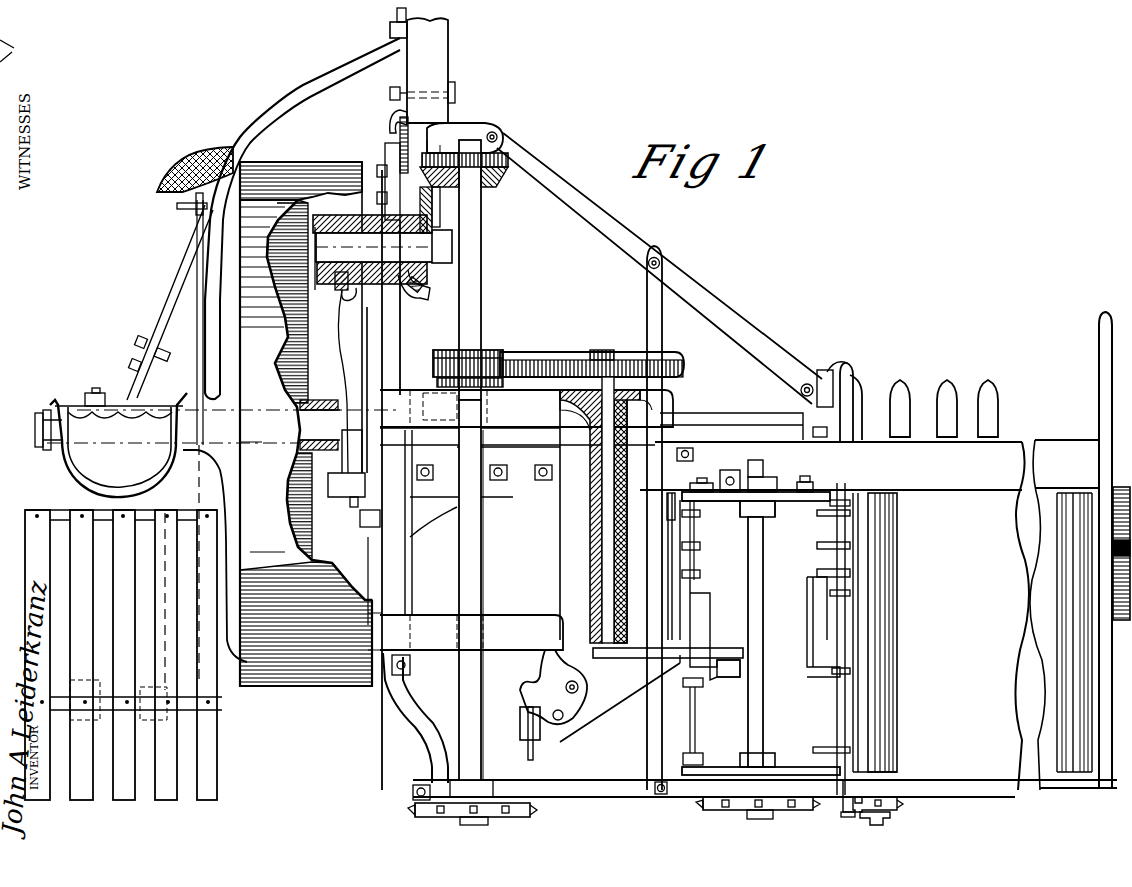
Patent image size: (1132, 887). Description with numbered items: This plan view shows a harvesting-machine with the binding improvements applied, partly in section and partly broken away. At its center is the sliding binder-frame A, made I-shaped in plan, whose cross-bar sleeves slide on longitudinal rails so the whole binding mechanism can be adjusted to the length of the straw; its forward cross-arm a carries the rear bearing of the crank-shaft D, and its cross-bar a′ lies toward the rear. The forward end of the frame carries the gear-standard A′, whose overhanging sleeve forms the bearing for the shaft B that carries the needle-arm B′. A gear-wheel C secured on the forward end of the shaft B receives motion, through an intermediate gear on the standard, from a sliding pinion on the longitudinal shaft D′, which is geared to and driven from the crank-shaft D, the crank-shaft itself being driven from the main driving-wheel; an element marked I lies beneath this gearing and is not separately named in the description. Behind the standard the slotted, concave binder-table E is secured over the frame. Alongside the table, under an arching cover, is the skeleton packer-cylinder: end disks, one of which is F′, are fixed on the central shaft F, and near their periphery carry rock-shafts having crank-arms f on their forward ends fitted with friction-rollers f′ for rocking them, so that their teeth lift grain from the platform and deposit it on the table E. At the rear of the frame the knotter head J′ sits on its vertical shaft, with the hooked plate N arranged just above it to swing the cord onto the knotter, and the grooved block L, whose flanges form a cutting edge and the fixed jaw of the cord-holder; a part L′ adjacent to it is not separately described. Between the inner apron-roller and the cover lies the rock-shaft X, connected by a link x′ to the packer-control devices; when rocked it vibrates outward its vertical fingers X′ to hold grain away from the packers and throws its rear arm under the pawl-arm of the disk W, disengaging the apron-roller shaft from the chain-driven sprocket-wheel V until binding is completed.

The longitudinal shaft D′ is at (467, 303).
The crank-shaft D is at (483, 545).
The pinion I is at (440, 385).
The gear-standard A′ is at (592, 349).
The gear-wheel C is at (628, 352).
The forward cross-arm a is at (526, 408).
The binder-frame A is at (606, 516).
The shaft B is at (668, 517).
The cross-bar a′ is at (471, 632).
The knotter head J′ is at (553, 687).
The plate N is at (565, 718).
The grooved block L is at (520, 723).
The stop rod L′ is at (527, 748).
The link x′ is at (671, 510).
The end disk F′ is at (720, 502).
The crank-arm f is at (754, 478).
The friction-roller f′ is at (719, 478).
The central shaft F is at (758, 643).
The needle-arm B′ is at (728, 671).
The binder-table E is at (831, 639).
The rock-shaft X is at (838, 640).
The vertical fingers X′ is at (850, 672).
The sprocket-wheel V is at (900, 803).
The disk W is at (882, 824).